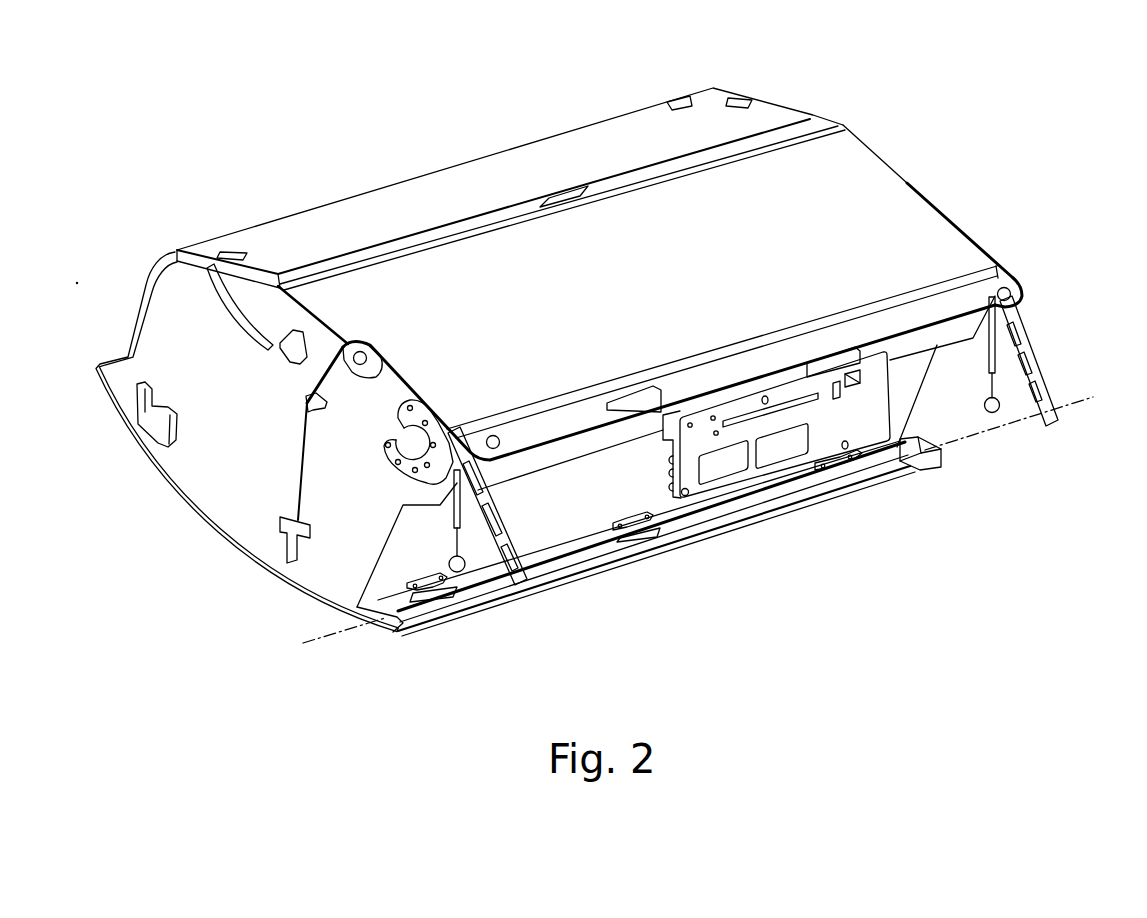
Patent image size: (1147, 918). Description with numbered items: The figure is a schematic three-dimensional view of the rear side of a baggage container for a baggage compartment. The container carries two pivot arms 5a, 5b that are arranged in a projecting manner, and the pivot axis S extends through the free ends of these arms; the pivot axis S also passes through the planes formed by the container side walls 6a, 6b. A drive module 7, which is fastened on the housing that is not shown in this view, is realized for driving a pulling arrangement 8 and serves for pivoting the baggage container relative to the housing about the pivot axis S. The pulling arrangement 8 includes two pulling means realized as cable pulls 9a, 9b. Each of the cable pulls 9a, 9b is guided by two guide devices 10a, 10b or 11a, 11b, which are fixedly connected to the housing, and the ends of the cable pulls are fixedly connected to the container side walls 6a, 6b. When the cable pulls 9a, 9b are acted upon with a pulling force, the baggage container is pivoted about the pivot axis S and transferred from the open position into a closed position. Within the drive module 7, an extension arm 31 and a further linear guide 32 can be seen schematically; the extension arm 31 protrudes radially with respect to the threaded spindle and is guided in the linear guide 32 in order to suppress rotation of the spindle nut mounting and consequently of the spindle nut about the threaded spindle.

The pulling arrangement 8 is at (918, 330).
The container side wall 6a is at (200, 450).
The container side wall 6b is at (954, 191).
The cable pull 9a is at (295, 472).
The cable pull 9b is at (995, 258).
The guide device 10a is at (493, 435).
The guide device 10b is at (1025, 296).
The guide device 11a is at (360, 350).
The guide device 11b is at (908, 184).
The pivot arm 5a is at (462, 545).
The pivot arm 5b is at (1034, 347).
The drive module 7 is at (870, 418).
The extension arm 31 is at (718, 423).
The linear guide 32 is at (748, 416).
The pivot axis S is at (1088, 398).